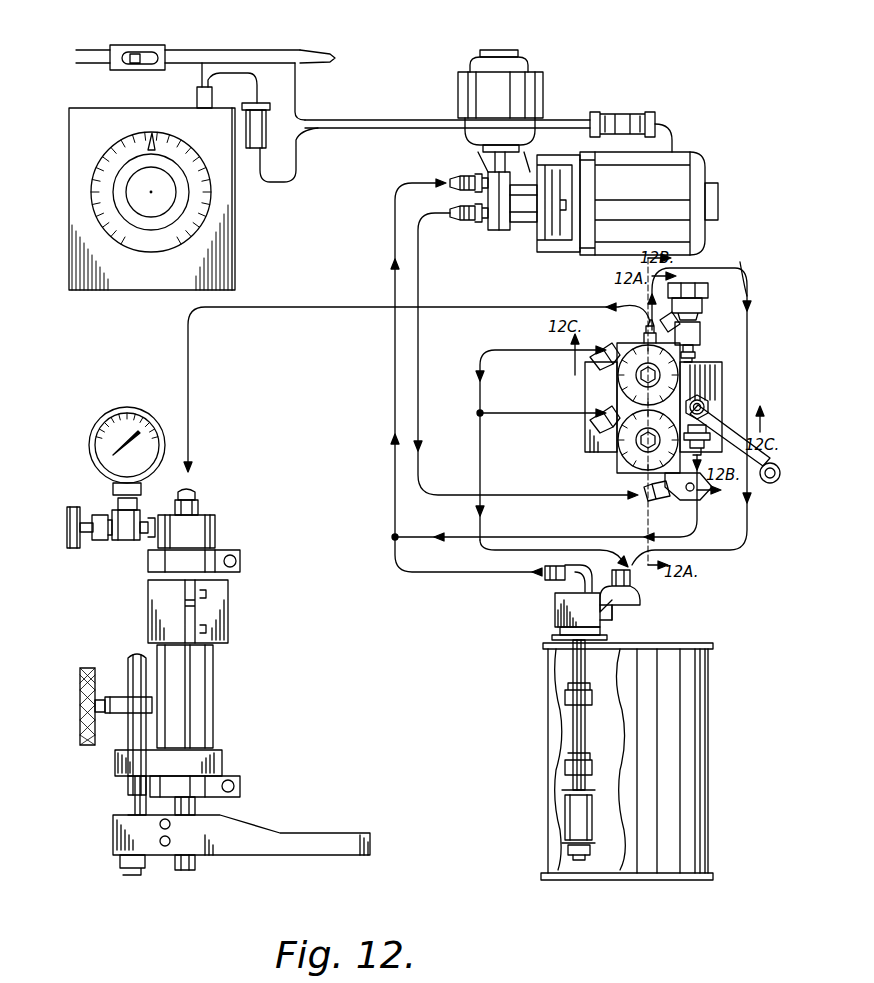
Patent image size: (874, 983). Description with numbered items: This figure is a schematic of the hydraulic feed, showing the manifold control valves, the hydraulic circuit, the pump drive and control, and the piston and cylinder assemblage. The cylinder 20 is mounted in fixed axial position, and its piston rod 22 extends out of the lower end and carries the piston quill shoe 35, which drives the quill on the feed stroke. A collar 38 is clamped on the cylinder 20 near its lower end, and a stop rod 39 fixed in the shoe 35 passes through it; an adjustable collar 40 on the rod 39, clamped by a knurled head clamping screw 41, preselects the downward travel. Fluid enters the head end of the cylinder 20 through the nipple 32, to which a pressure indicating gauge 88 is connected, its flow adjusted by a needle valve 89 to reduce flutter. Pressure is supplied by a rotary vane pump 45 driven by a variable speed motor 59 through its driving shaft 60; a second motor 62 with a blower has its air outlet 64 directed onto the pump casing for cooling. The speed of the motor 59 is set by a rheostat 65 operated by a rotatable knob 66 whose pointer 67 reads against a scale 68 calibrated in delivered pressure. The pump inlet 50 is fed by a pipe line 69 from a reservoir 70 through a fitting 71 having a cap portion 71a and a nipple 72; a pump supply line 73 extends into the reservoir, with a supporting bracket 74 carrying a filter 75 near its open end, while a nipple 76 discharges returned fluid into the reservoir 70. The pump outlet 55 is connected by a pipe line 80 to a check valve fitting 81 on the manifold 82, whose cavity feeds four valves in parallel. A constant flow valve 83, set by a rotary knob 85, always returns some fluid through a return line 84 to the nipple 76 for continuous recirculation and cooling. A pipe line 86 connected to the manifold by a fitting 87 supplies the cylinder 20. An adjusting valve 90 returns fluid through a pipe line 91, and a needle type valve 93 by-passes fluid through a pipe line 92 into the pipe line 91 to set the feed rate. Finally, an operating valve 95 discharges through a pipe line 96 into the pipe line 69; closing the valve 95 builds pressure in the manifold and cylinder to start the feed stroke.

The cylinder 20 is at (228, 699).
The piston rod 22 is at (196, 862).
The nipple 32 is at (196, 490).
The piston quill shoe 35 is at (262, 832).
The collar 38 is at (115, 764).
The stop rod 39 is at (128, 790).
The adjustable collar 40 is at (112, 695).
The knurled head clamping screw 41 is at (80, 689).
The pump 45 is at (497, 232).
The inlet 50 is at (452, 183).
The outlet 55 is at (468, 222).
The motor 59 is at (706, 155).
The driving shaft 60 is at (565, 248).
The motor 62 is at (540, 60).
The air outlet 64 is at (482, 160).
The rheostat 65 is at (236, 236).
The rotatable knob 66 is at (133, 188).
The pointer 67 is at (149, 140).
The scale 68 is at (100, 155).
The pipe line 69 is at (393, 385).
The reservoir 70 is at (545, 720).
The fitting 71 is at (552, 619).
The cap portion 71a is at (552, 636).
The nipple 72 is at (545, 578).
The pump supply line 73 is at (572, 672).
The supporting bracket 74 is at (570, 850).
The filter 75 is at (578, 815).
The nipple 76 is at (632, 604).
The pipe line 80 is at (419, 332).
The check valve fitting 81 is at (665, 503).
The manifold 82 is at (600, 403).
The constant flow valve 83 is at (700, 338).
The return line 84 is at (748, 356).
The rotary knob 85 is at (751, 265).
The pipe line 86 is at (190, 388).
The fitting 87 is at (642, 335).
The pressure indicating gauge 88 is at (104, 420).
The needle valve 89 is at (72, 506).
The adjusting valve 90 is at (640, 379).
The pipe line 91 is at (535, 350).
The pipe line 92 is at (532, 420).
The valve 93 is at (630, 455).
The operating valve 95 is at (705, 406).
The pipe line 96 is at (528, 537).